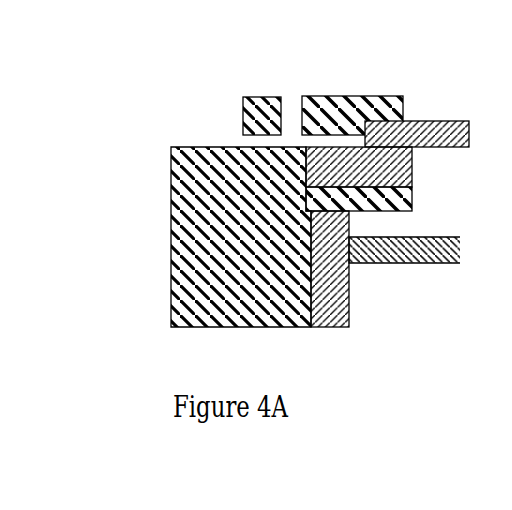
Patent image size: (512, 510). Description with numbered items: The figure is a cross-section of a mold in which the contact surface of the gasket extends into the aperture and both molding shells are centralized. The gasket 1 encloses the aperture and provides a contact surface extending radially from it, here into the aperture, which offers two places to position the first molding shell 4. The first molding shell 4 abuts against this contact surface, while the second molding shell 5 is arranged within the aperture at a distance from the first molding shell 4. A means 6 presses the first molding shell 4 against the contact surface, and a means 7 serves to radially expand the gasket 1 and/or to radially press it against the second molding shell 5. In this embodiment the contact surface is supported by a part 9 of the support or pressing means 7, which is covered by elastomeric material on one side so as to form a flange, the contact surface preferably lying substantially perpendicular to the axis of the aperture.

The gasket 1 is at (333, 327).
The first molding shell 4 is at (443, 120).
The second molding shell 5 is at (408, 250).
The means for pressing the first molding shell 6 is at (265, 112).
The means for radially expanding or pressing the gasket 7 is at (185, 235).
The part of the support or pressing means 9 is at (408, 198).